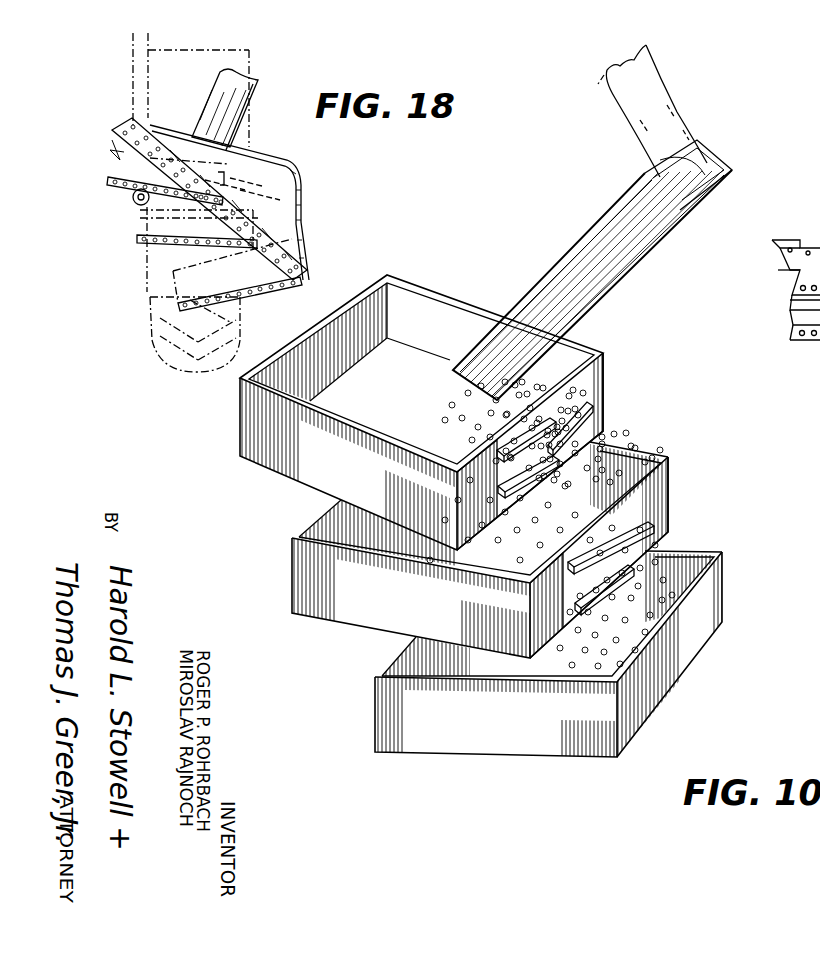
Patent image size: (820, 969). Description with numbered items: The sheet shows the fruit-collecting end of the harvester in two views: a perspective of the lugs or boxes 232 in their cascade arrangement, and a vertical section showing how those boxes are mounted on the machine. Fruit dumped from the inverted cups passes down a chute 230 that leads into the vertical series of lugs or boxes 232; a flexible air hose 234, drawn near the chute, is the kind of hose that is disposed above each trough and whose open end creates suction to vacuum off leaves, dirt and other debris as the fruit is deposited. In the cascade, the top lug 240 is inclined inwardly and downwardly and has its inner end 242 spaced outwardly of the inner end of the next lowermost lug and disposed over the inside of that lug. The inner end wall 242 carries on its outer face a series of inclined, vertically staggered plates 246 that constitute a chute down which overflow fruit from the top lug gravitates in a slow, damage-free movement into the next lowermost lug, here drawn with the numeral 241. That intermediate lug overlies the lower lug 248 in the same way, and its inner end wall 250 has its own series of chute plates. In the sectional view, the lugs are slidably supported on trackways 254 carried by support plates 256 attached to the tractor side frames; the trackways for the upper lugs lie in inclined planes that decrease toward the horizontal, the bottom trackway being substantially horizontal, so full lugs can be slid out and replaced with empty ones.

In FIG. 18, the chute 230 is at (262, 82).
In FIG. 10, the chute 230 is at (622, 275).
In FIG. 10, the lugs or boxes 232 is at (427, 276).
In FIG. 10, the flexible air hose 234 is at (682, 92).
In FIG. 18, the top lug 240 is at (118, 150).
In FIG. 10, the top lug 240 is at (368, 292).
In FIG. 18, the intermediate screening tray 241 is at (140, 225).
In FIG. 10, the intermediate screening tray 241 is at (650, 457).
In FIG. 10, the inner end wall 242 is at (604, 392).
In FIG. 10, the inclined vertically staggered plates 246 is at (588, 423).
In FIG. 18, the lower lug 248 is at (190, 280).
In FIG. 10, the lower lug 248 is at (718, 592).
In FIG. 10, the inner end wall 250 is at (662, 496).
In FIG. 18, the trackways 254 is at (108, 180).
In FIG. 18, the support plates 256 is at (127, 126).